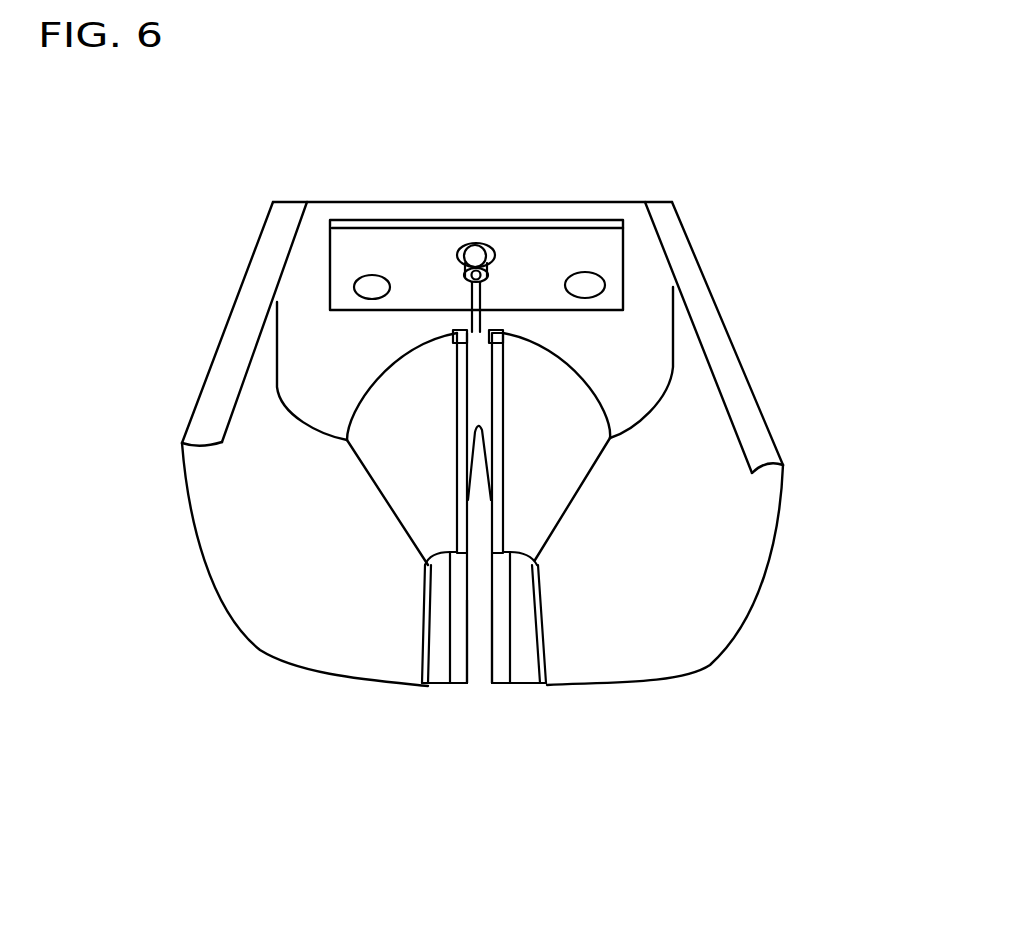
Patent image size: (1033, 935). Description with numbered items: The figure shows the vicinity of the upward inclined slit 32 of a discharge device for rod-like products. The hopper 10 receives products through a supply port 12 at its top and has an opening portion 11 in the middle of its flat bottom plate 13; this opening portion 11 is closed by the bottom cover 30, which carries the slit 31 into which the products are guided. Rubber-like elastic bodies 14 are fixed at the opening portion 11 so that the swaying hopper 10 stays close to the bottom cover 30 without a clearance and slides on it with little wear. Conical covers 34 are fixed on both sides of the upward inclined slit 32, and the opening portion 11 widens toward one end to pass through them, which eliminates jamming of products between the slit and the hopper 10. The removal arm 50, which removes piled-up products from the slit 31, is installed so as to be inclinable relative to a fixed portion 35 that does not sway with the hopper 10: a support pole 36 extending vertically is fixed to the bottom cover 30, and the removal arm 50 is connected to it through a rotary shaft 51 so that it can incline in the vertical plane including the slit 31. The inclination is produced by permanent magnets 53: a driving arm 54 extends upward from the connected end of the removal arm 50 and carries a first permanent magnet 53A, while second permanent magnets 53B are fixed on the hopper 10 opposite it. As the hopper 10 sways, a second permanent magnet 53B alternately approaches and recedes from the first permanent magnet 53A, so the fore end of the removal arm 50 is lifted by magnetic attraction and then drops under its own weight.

The hopper 10 is at (785, 430).
The opening portion 11 is at (542, 652).
The supply port 12 is at (713, 457).
The flat bottom plate 13 is at (320, 660).
The rubber-like elastic body 14 is at (425, 640).
The bottom cover 30 is at (435, 677).
The slit 31 is at (480, 635).
The upward inclined slit 32 is at (488, 507).
The conical cover 34 is at (372, 444).
The fixed portion 35 is at (452, 330).
The support pole 36 is at (502, 333).
The removal arm 50 is at (478, 400).
The rotary shaft 51 is at (507, 337).
The permanent magnets 53 is at (553, 157).
The first permanent magnet 53A is at (470, 255).
The second permanent magnet 53B is at (372, 288).
The driving arm 54 is at (488, 299).